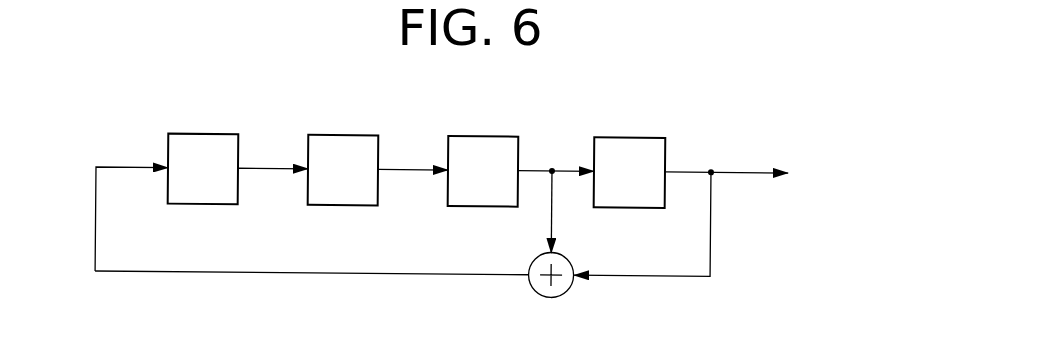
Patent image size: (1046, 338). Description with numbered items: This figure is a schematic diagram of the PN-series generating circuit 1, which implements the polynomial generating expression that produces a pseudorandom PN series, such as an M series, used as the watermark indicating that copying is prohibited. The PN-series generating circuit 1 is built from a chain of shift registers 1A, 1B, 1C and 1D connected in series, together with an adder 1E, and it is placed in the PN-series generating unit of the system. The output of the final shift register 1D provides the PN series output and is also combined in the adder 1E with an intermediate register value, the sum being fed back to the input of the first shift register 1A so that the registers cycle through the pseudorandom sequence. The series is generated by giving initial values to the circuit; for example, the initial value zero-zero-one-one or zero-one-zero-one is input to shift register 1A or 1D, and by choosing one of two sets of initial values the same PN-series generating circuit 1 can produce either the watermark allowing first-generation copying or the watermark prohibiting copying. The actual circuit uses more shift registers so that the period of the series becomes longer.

The PN-series generating circuit 1 is at (690, 98).
The shift register 1A is at (203, 133).
The shift register 1B is at (343, 133).
The shift register 1C is at (483, 133).
The shift register 1D is at (624, 133).
The adder 1E is at (532, 258).